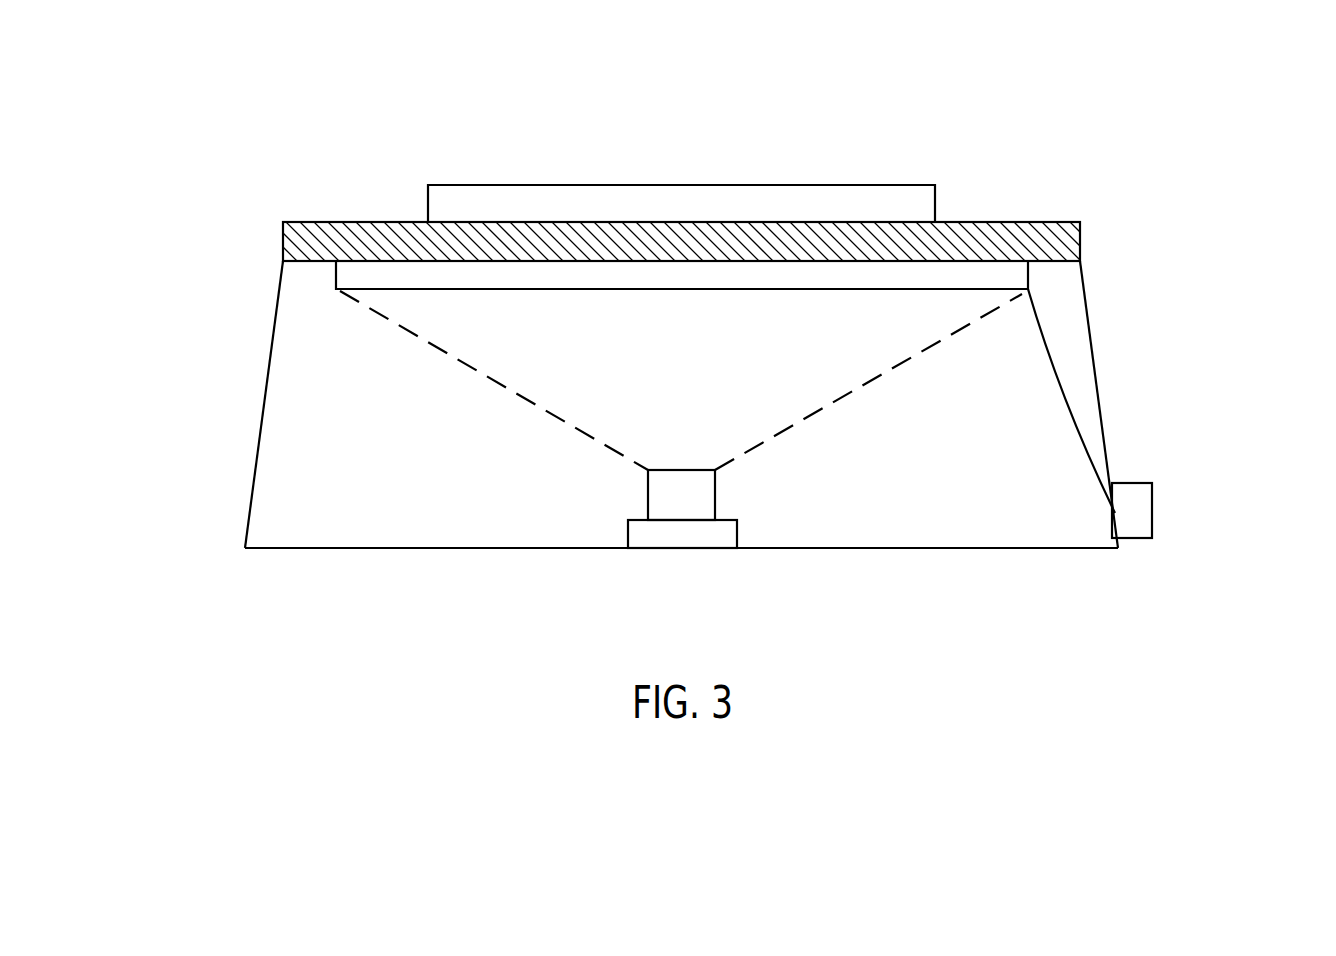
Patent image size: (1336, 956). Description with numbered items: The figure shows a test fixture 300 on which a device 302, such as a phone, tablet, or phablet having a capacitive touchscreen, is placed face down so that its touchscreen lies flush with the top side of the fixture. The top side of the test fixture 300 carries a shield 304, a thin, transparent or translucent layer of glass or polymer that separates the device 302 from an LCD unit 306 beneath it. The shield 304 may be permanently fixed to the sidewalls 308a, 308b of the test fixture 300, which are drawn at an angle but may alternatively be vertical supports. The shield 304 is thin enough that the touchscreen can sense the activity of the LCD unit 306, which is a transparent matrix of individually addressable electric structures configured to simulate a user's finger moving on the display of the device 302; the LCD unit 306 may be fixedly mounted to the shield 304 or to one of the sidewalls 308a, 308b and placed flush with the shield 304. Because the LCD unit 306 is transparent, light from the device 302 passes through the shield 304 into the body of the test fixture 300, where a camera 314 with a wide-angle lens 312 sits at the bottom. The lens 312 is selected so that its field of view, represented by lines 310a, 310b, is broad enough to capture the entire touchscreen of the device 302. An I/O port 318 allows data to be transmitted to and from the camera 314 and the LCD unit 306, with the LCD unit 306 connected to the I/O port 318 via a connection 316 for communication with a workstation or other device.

The test fixture 300 is at (251, 66).
The device 302 is at (888, 184).
The shield 304 is at (1058, 223).
The LCD unit 306 is at (617, 290).
The sidewall 308a is at (1097, 365).
The sidewall 308b is at (273, 338).
The field of view line 310a is at (528, 402).
The field of view line 310b is at (830, 403).
The wide-angle lens 312 is at (715, 502).
The camera 314 is at (628, 537).
The connection 316 is at (1095, 473).
The I/O port 318 is at (1152, 513).